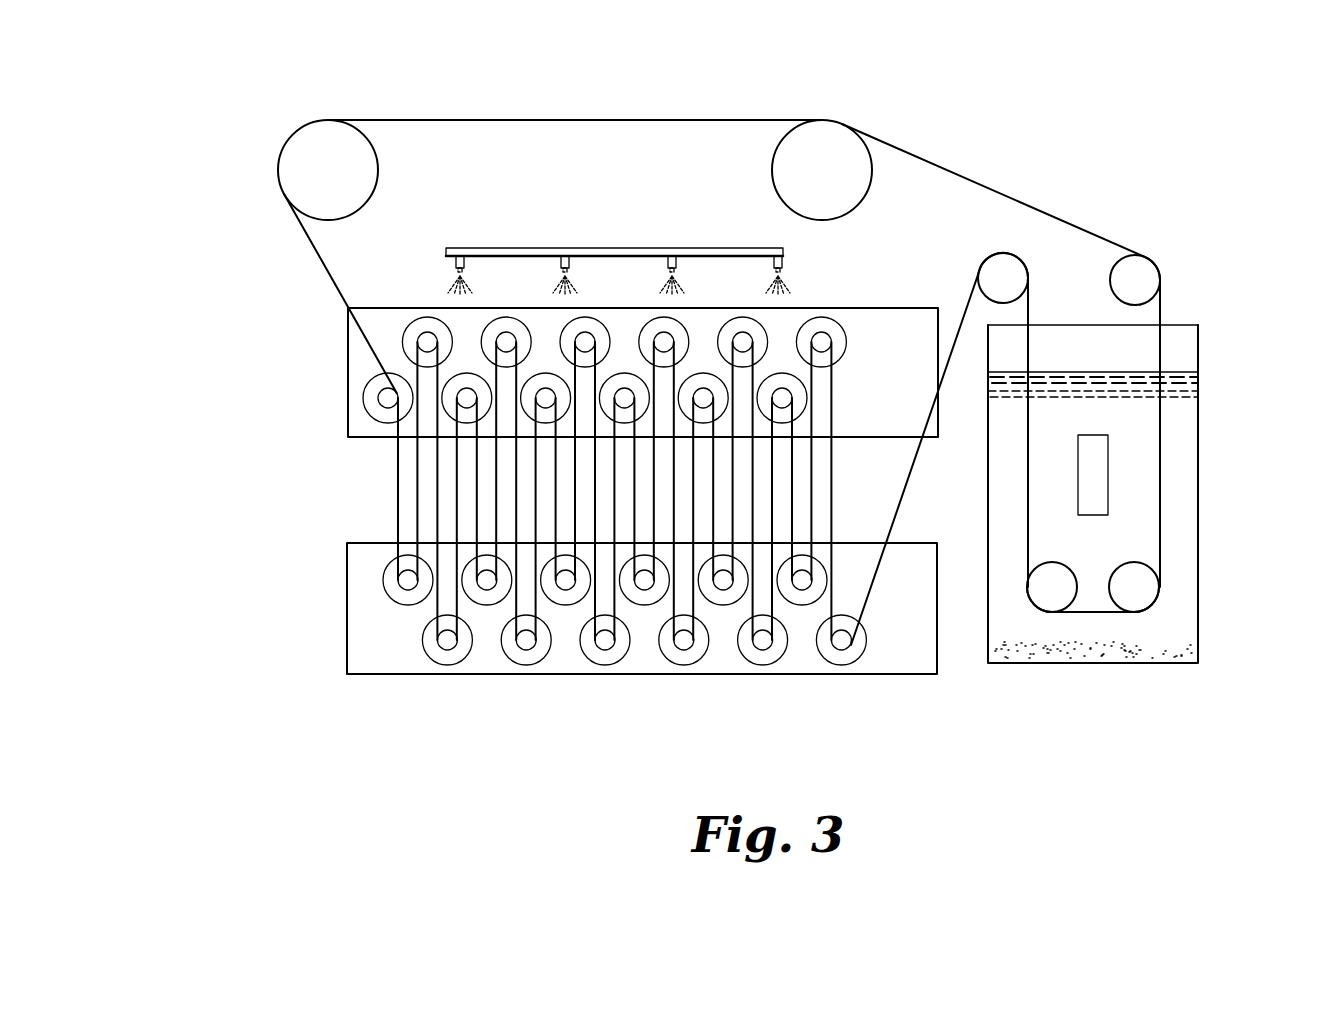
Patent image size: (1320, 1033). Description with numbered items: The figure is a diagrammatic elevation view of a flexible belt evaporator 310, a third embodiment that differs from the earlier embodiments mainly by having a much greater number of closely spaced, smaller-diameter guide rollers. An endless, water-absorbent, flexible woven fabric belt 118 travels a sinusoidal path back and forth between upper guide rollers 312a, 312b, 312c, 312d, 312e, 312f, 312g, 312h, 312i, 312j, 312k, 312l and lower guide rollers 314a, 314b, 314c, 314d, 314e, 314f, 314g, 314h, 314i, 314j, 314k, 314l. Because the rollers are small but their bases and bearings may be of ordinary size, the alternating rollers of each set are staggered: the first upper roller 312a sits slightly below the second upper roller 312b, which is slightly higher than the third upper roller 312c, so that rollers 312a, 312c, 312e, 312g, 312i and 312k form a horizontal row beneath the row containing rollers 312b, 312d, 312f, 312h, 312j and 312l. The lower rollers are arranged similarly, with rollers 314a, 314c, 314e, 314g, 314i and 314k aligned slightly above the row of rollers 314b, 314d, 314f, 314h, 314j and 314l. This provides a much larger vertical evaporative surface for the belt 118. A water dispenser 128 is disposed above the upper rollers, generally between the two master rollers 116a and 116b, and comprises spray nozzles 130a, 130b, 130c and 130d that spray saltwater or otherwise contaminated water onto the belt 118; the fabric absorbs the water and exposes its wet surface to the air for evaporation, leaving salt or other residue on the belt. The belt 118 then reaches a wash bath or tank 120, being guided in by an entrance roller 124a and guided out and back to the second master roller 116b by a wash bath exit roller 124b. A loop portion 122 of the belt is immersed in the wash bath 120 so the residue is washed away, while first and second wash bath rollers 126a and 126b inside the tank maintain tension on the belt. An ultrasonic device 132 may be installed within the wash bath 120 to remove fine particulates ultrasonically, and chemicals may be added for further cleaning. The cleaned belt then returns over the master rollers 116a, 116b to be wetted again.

The flexible belt evaporator 310 is at (327, 741).
The belt 118 is at (471, 120).
The master roller 116a is at (298, 178).
The second master roller 116b is at (792, 183).
The water dispenser 128 is at (446, 250).
The spray nozzle 130a is at (467, 262).
The spray nozzle 130b is at (578, 262).
The spray nozzle 130c is at (690, 262).
The spray nozzle 130d is at (790, 262).
The first upper roller 312a is at (378, 400).
The second upper roller 312b is at (418, 330).
The third upper roller 312c is at (467, 396).
The upper guide roller 312d is at (506, 332).
The upper guide roller 312e is at (546, 388).
The upper guide roller 312f is at (590, 338).
The upper guide roller 312g is at (625, 392).
The upper guide roller 312h is at (666, 340).
The upper guide roller 312i is at (703, 392).
The upper guide roller 312j is at (743, 342).
The upper guide roller 312k is at (790, 398).
The upper guide roller 312l is at (823, 340).
The lower guide roller 314a is at (385, 580).
The lower guide roller 314b is at (438, 643).
The lower guide roller 314c is at (487, 592).
The lower guide roller 314d is at (522, 647).
The lower guide roller 314e is at (564, 592).
The lower guide roller 314f is at (605, 650).
The lower guide roller 314g is at (641, 593).
The lower guide roller 314h is at (684, 650).
The lower guide roller 314i is at (722, 592).
The lower guide roller 314j is at (763, 650).
The lower guide roller 314k is at (801, 592).
The lower guide roller 314l is at (840, 652).
The entrance roller 124a is at (1002, 254).
The wash bath exit roller 124b is at (1152, 257).
The first wash bath roller 126a is at (1040, 612).
The second wash bath roller 126b is at (1158, 600).
The wash bath 120 is at (1163, 665).
The loop portion 122 is at (1160, 500).
The ultrasonic device 132 is at (1110, 462).